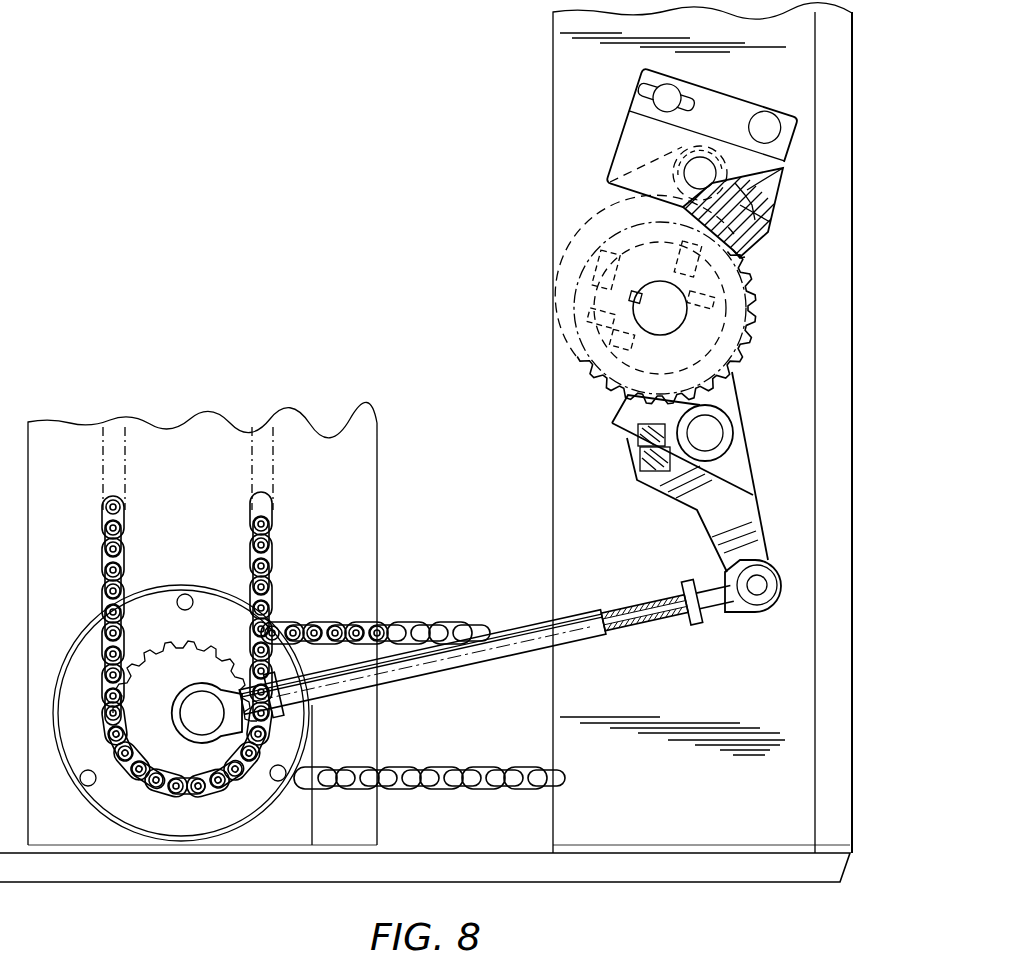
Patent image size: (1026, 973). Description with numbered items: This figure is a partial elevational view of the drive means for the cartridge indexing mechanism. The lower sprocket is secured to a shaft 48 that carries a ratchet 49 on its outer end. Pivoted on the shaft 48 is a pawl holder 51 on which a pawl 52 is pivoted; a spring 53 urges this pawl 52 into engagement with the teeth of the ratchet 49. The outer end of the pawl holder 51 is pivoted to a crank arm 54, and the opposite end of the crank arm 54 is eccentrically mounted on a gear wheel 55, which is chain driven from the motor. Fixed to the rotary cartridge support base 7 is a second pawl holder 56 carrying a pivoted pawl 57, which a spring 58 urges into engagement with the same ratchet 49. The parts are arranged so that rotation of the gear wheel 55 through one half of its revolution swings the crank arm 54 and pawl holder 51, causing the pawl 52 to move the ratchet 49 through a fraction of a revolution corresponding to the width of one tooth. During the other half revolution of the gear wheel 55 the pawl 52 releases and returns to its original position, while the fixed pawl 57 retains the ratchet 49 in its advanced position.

The rotary cartridge support base 7 is at (783, 734).
The shaft 48 is at (656, 292).
The ratchet 49 is at (735, 312).
The pawl holder 51 is at (735, 470).
The pawl 52 is at (615, 433).
The spring 53 is at (640, 468).
The crank arm 54 is at (623, 622).
The gear wheel 55 is at (178, 758).
The pawl holder 56 is at (717, 112).
The pawl 57 is at (766, 236).
The spring 58 is at (780, 184).